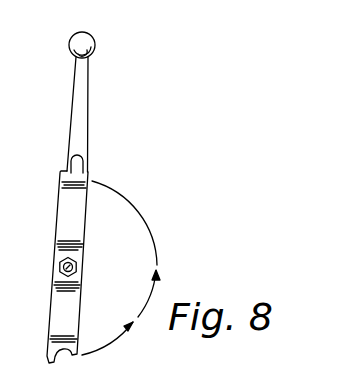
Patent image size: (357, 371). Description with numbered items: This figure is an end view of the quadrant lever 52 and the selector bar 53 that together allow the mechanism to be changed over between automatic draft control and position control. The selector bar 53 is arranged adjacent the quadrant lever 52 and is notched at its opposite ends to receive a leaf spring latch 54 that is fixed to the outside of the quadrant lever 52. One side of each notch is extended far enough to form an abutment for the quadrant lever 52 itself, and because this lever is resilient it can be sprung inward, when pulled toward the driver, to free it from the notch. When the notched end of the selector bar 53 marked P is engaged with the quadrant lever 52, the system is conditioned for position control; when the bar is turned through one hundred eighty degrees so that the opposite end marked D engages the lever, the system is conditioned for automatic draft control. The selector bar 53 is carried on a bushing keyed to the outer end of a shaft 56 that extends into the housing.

The quadrant lever 52 is at (82, 92).
The selector bar 53 is at (65, 217).
The leaf spring latch 54 is at (80, 166).
The shaft 56 is at (63, 267).